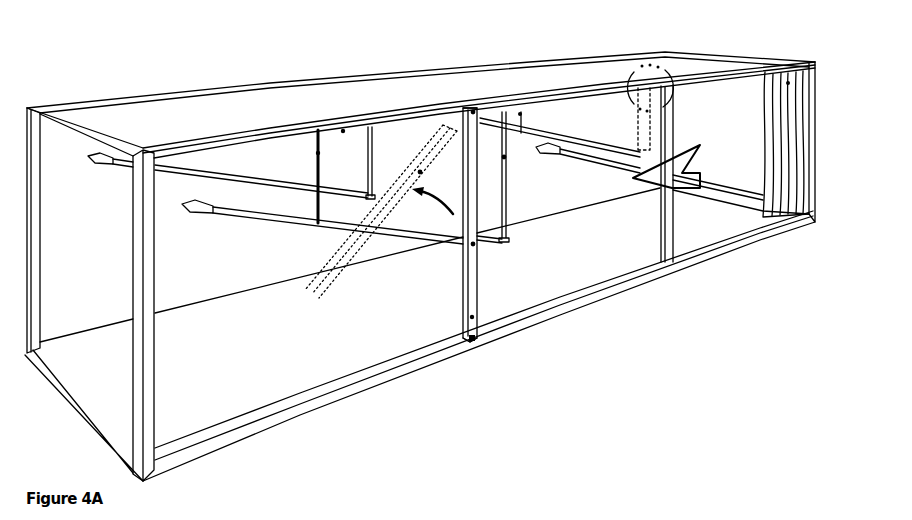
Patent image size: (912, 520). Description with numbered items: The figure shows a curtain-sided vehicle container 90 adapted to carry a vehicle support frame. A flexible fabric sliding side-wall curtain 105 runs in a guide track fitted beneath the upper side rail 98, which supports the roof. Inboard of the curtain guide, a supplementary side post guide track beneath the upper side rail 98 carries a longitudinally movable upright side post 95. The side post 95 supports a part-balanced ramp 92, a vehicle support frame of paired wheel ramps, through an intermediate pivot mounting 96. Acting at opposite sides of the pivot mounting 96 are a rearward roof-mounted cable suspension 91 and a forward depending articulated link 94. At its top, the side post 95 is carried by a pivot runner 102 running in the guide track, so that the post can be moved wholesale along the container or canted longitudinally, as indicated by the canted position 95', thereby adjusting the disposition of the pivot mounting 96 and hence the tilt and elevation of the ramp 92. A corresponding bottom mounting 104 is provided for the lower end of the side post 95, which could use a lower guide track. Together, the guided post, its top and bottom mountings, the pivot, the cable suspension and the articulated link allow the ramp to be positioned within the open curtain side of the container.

The shelving assembly 90 is at (418, 53).
The cable suspension 91 is at (318, 153).
The ramp 92 is at (248, 218).
The articulated link 94 is at (504, 155).
The side post 95 is at (437, 292).
The pivot post in pivoted position 95' is at (399, 151).
The pivot mounting 96 is at (474, 244).
The upper side rail 98 is at (343, 131).
The pivot runner 102 is at (475, 111).
The bottom mounting 104 is at (471, 340).
The curtain 105 is at (785, 70).